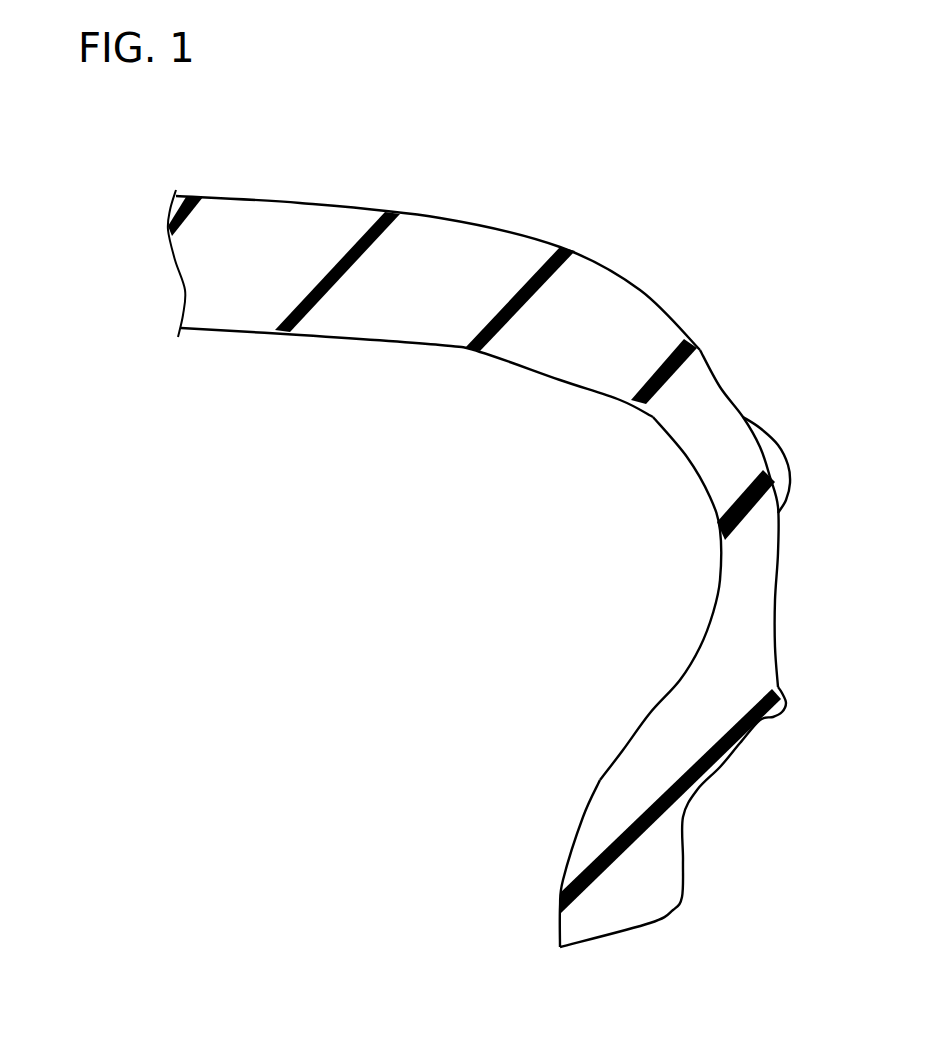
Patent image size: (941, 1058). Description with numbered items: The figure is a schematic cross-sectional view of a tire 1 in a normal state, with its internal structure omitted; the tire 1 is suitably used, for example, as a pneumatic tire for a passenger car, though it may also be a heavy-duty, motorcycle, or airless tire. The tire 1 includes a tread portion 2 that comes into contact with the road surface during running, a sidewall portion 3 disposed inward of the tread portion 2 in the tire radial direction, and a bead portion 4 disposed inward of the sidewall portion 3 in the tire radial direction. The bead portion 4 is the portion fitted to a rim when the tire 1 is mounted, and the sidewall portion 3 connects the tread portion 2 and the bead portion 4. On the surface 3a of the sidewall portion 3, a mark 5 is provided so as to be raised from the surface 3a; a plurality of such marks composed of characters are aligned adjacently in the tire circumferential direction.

The tire 1 is at (622, 138).
The tread portion 2 is at (418, 183).
The sidewall portion 3 is at (802, 568).
The surface 3a is at (717, 372).
The bead portion 4 is at (724, 845).
The mark 5 is at (776, 461).